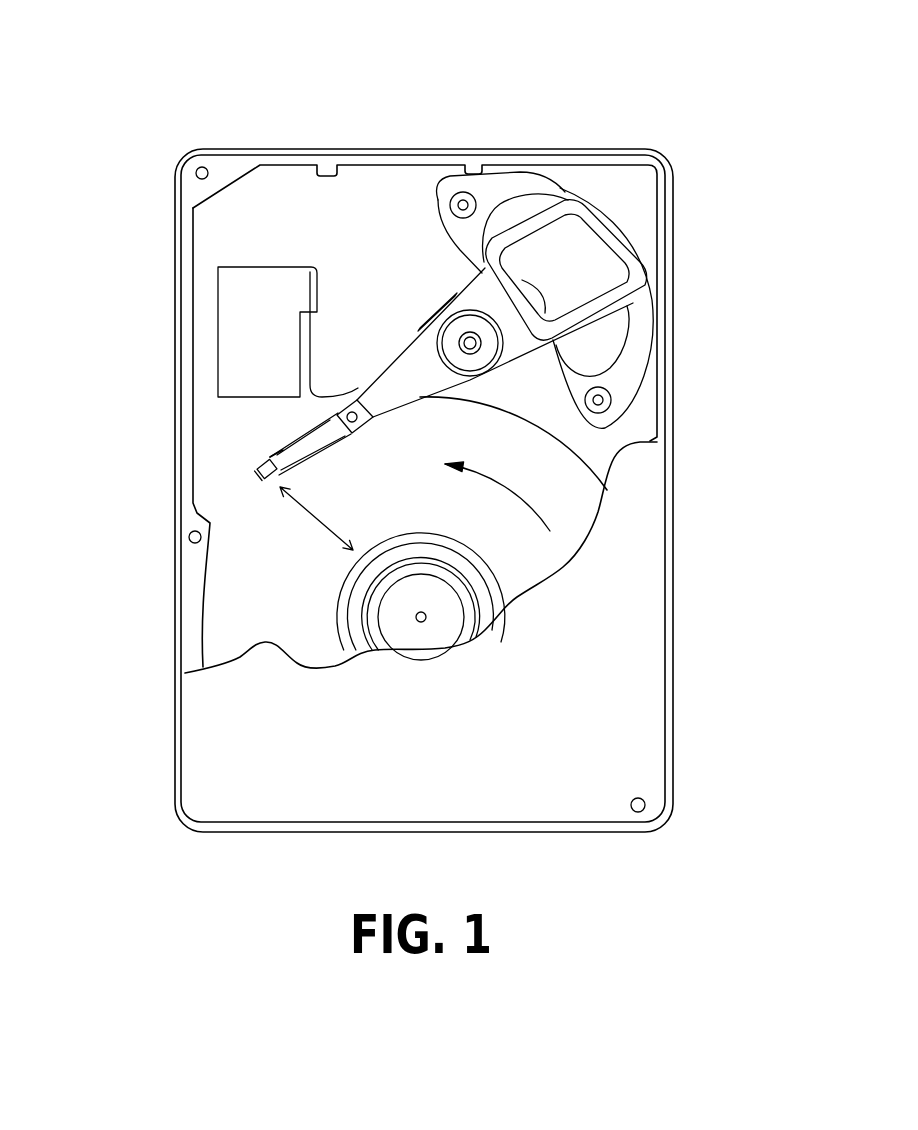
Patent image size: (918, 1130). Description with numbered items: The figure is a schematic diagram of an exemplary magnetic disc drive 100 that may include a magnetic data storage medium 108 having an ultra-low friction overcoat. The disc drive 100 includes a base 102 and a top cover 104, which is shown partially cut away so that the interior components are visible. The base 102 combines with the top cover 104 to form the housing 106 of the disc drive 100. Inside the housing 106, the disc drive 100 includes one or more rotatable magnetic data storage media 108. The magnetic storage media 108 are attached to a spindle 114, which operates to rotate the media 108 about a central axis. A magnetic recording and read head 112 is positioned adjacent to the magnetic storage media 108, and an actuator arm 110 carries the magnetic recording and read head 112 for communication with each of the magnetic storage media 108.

The magnetic disc drive 100 is at (177, 87).
The base 102 is at (398, 250).
The top cover 104 is at (446, 706).
The housing 106 is at (668, 412).
The magnetic data storage medium 108 is at (413, 499).
The actuator arm 110 is at (417, 375).
The magnetic recording and read head 112 is at (258, 464).
The spindle 114 is at (415, 617).